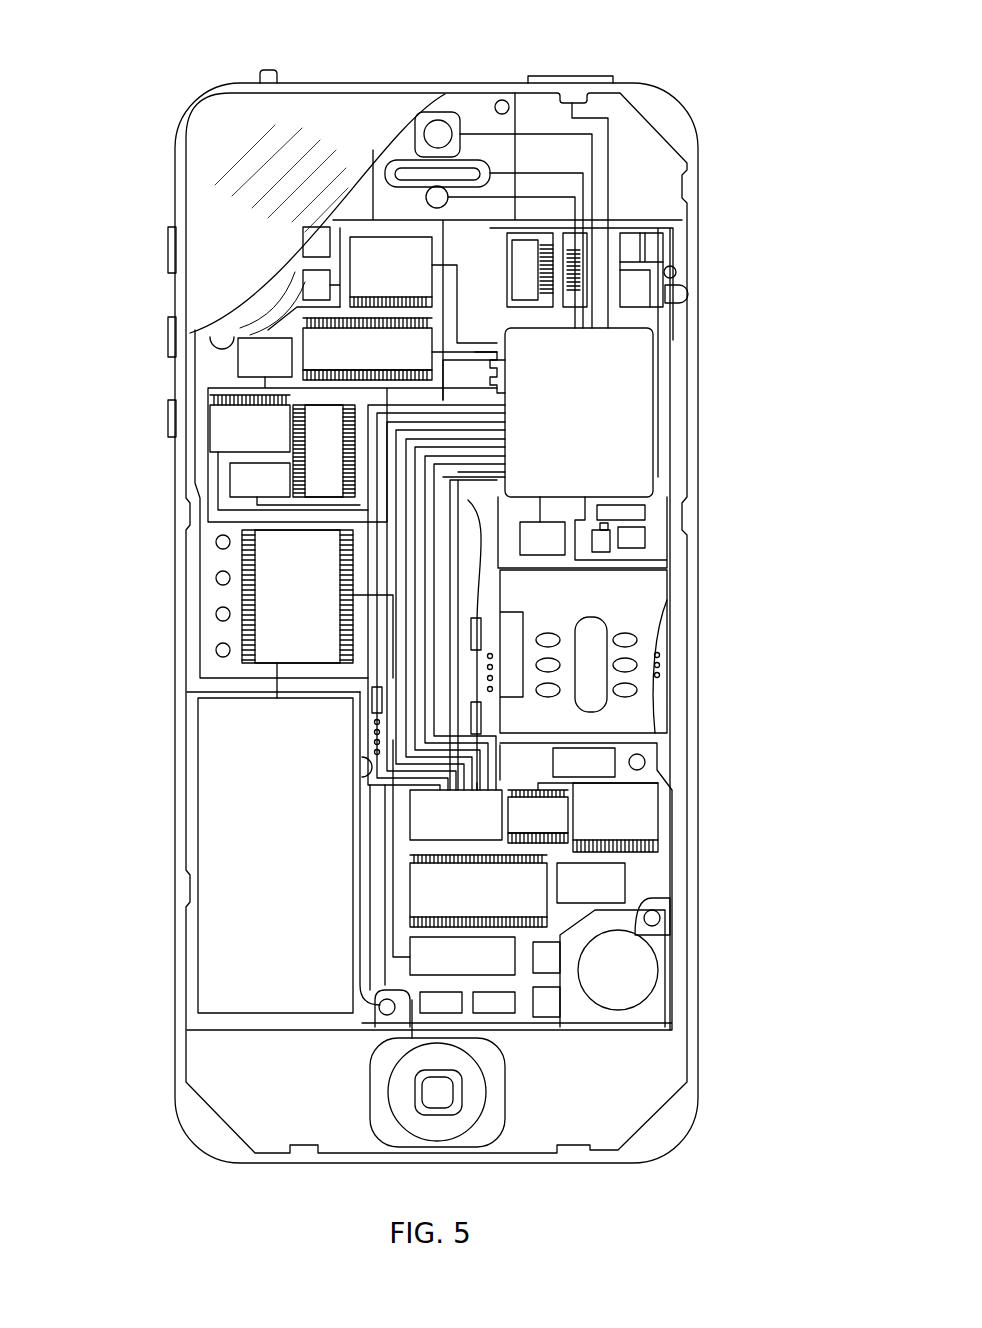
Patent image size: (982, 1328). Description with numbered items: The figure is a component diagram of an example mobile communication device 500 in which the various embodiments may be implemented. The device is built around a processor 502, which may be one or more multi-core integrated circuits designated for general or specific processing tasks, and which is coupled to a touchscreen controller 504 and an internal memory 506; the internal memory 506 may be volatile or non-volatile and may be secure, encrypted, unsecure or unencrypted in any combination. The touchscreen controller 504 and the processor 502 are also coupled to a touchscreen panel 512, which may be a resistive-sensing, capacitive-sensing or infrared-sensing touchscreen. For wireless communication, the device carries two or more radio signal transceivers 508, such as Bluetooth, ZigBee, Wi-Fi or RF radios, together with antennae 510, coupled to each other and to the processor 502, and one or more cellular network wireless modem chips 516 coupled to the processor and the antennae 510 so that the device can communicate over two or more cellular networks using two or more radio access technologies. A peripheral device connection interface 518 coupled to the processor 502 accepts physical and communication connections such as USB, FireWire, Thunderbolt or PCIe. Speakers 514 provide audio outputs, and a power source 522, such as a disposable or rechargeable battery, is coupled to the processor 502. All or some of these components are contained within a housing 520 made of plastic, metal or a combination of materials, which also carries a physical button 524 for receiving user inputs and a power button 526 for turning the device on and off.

The mobile communication device 500 is at (126, 62).
The processor 502 is at (517, 559).
The touchscreen controller 504 is at (345, 243).
The internal memory 506 is at (302, 349).
The radio signal transceivers 508 is at (583, 257).
The antennae 510 is at (650, 288).
The touchscreen panel 512 is at (218, 147).
The speakers 514 is at (394, 163).
The cellular network wireless modem chip 516 is at (534, 836).
The peripheral device connection interface 518 is at (408, 963).
The housing 520 is at (697, 1050).
The power source 522 is at (273, 852).
The physical button 524 is at (452, 1100).
The power button 526 is at (572, 76).